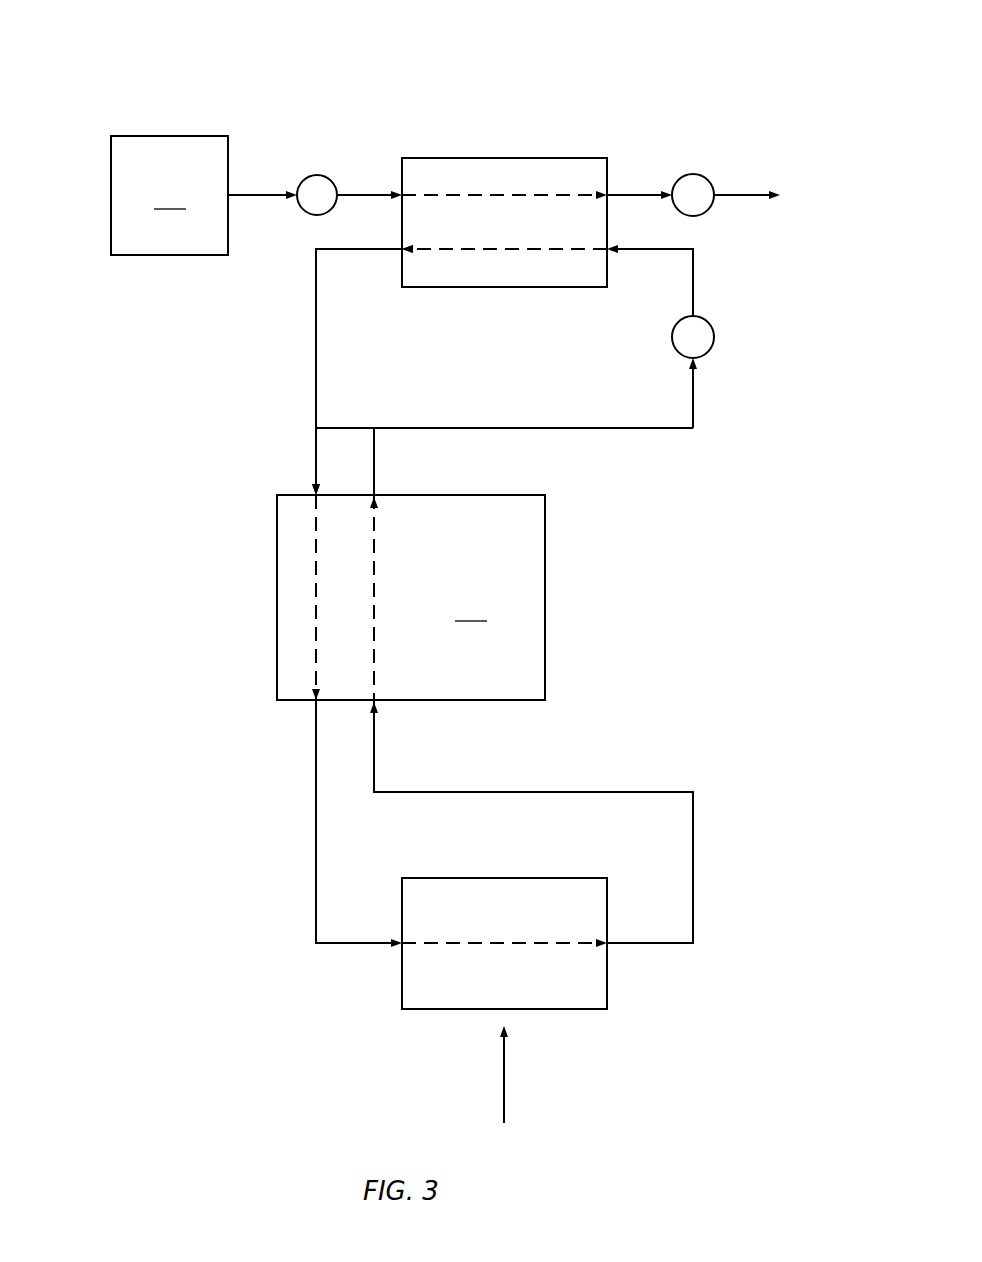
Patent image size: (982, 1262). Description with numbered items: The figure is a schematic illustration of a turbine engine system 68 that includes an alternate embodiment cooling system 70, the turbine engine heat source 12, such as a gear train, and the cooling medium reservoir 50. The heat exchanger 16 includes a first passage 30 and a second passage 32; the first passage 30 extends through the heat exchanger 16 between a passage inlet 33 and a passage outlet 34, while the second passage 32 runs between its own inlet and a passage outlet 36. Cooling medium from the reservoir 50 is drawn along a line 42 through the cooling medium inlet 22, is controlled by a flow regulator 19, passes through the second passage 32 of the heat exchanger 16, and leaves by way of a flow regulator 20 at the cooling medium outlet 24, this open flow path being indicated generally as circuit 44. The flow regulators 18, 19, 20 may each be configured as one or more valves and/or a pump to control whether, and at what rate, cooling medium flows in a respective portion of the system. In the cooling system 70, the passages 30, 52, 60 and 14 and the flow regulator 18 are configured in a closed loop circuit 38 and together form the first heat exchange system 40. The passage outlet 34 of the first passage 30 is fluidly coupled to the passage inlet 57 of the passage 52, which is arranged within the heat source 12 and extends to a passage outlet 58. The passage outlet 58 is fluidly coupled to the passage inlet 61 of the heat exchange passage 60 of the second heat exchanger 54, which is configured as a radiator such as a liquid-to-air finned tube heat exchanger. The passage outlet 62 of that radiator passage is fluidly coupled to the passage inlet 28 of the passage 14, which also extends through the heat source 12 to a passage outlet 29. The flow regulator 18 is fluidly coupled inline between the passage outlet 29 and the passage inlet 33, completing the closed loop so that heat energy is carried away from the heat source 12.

The turbine engine heat source 12 is at (411, 597).
The passage 14 is at (376, 565).
The heat exchanger 16 is at (455, 158).
The flow regulator 18 is at (715, 340).
The flow regulator 19 is at (315, 174).
The flow regulator 20 is at (693, 173).
The cooling medium inlet 22 is at (258, 198).
The cooling medium outlet 24 is at (755, 198).
The passage inlet 28 is at (378, 705).
The passage outlet 29 is at (385, 490).
The first passage 30 is at (502, 252).
The second passage 32 is at (502, 193).
The passage inlet 33 is at (608, 252).
The passage outlet 34 is at (400, 193).
The passage outlet 36 is at (610, 193).
The closed loop circuit 38 is at (316, 372).
The first heat exchange system 40 is at (190, 434).
The fluid line 42 is at (245, 192).
The fluid circuit 44 is at (580, 110).
The cooling medium reservoir 50 is at (169, 195).
The passage 52 is at (315, 650).
The second heat exchanger 54 is at (519, 878).
The passage inlet 57 is at (306, 492).
The passage outlet 58 is at (312, 705).
The heat exchange passage 60 is at (455, 948).
The passage inlet 61 is at (400, 946).
The passage outlet 62 is at (610, 946).
The turbine engine system 68 is at (112, 70).
The cooling system 70 is at (704, 617).